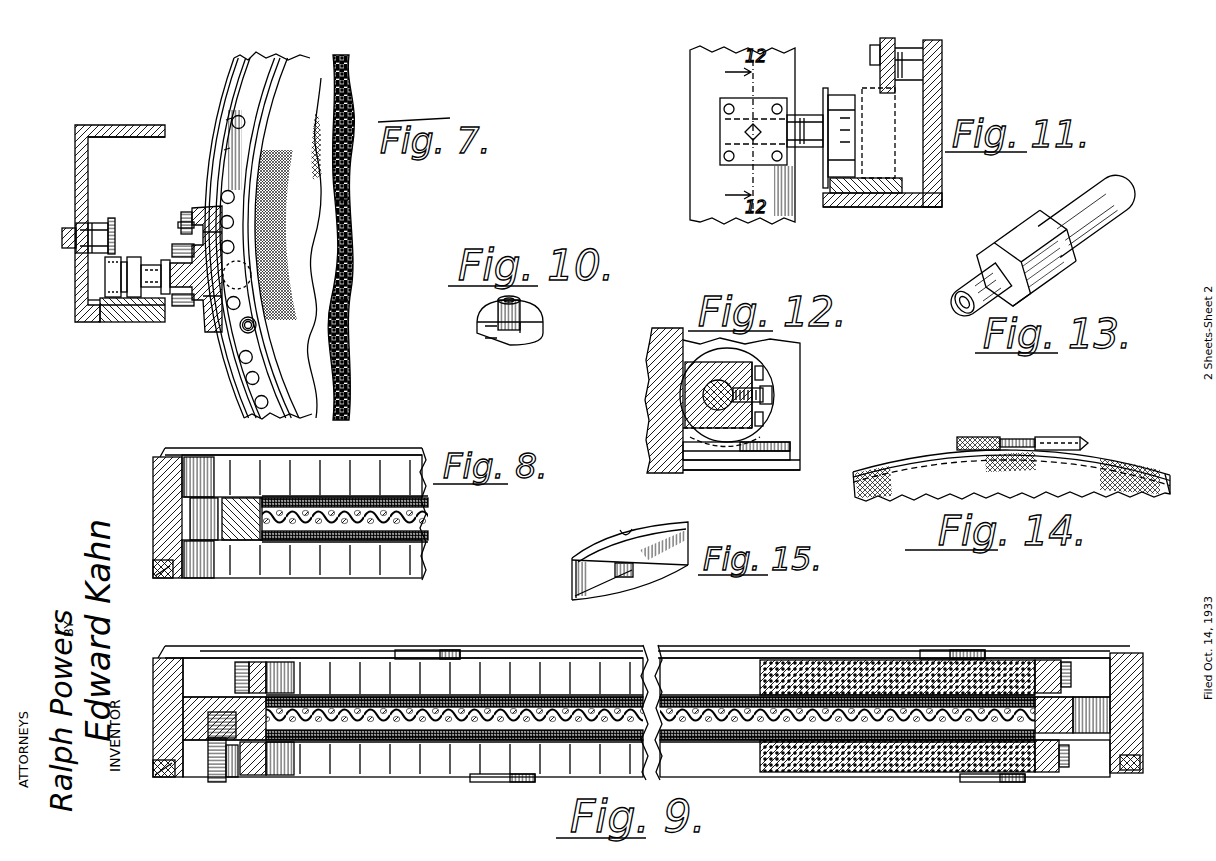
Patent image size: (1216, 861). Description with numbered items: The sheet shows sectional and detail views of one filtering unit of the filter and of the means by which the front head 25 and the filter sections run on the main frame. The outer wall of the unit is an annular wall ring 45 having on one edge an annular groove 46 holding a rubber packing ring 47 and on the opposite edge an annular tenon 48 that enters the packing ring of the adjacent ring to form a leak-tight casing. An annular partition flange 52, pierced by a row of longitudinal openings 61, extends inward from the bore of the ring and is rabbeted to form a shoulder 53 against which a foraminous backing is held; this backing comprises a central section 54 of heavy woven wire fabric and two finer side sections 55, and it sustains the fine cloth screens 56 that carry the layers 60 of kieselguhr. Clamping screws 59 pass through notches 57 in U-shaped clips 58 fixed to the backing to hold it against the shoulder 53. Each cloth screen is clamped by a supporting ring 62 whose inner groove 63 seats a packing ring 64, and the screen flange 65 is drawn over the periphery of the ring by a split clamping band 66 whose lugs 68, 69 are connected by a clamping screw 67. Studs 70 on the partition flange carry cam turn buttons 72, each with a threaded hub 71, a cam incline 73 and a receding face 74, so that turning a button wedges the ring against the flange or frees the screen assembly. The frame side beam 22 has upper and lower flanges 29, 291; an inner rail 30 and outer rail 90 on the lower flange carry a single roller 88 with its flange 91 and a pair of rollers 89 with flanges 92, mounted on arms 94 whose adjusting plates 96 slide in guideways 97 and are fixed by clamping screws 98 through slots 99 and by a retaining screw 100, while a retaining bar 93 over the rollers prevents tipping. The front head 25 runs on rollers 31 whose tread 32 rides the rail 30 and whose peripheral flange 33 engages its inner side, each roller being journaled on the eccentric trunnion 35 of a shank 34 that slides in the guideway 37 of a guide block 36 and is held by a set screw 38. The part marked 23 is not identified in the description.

In FIG. 7, the frame side beam 22 is at (76, 158).
In FIG. 11, the frame member 23 is at (942, 146).
In FIG. 12, the frame member 23 is at (800, 350).
In FIG. 12, the front head 25 is at (660, 338).
In FIG. 7, the upper flange 29 is at (122, 127).
In FIG. 7, the inner rail 30 is at (135, 322).
In FIG. 11, the inner rail 30 is at (835, 207).
In FIG. 12, the inner rail 30 is at (790, 448).
In FIG. 11, the supporting roller 31 is at (820, 150).
In FIG. 11, the tread 32 is at (840, 100).
In FIG. 11, the peripheral flange 33 is at (825, 95).
In FIG. 12, the peripheral flange 33 is at (772, 418).
In FIG. 11, the shank 34 is at (722, 142).
In FIG. 12, the shank 34 is at (688, 416).
In FIG. 13, the shank 34 is at (1038, 240).
In FIG. 13, the trunnion 35 is at (964, 294).
In FIG. 11, the guide block 36 is at (722, 128).
In FIG. 12, the guide block 36 is at (748, 442).
In FIG. 12, the guideway 37 is at (700, 400).
In FIG. 11, the set screw 38 is at (748, 135).
In FIG. 12, the set screw 38 is at (772, 390).
In FIG. 7, the wall ring 45 is at (238, 80).
In FIG. 8, the wall ring 45 is at (154, 470).
In FIG. 9, the wall ring 45 is at (156, 680).
In FIG. 8, the annular groove 46 is at (154, 556).
In FIG. 9, the annular groove 46 is at (156, 768).
In FIG. 7, the packing ring 47 is at (246, 62).
In FIG. 8, the packing ring 47 is at (162, 578).
In FIG. 9, the packing ring 47 is at (164, 780).
In FIG. 8, the annular tenon 48 is at (172, 450).
In FIG. 9, the annular tenon 48 is at (170, 648).
In FIG. 7, the partition flange 52 is at (271, 76).
In FIG. 8, the partition flange 52 is at (236, 540).
In FIG. 9, the partition flange 52 is at (190, 700).
In FIG. 8, the annular shoulder 53 is at (300, 498).
In FIG. 9, the annular shoulder 53 is at (290, 662).
In FIG. 7, the central section 54 is at (352, 112).
In FIG. 8, the central section 54 is at (420, 520).
In FIG. 9, the central section 54 is at (440, 720).
In FIG. 7, the side sections 55 is at (350, 90).
In FIG. 8, the side sections 55 is at (420, 498).
In FIG. 9, the side sections 55 is at (528, 700).
In FIG. 7, the cloth screens 56 is at (323, 90).
In FIG. 9, the cloth screens 56 is at (470, 695).
In FIG. 14, the cloth screens 56 is at (905, 488).
In FIG. 15, the notches 57 is at (626, 537).
In FIG. 15, the U-shaped clips 58 is at (640, 590).
In FIG. 8, the clamping screws 59 is at (262, 498).
In FIG. 9, the kieselguhr layers 60 is at (805, 668).
In FIG. 7, the longitudinal openings 61 is at (245, 122).
In FIG. 8, the longitudinal openings 61 is at (212, 496).
In FIG. 9, the longitudinal openings 61 is at (1090, 697).
In FIG. 7, the supporting ring 62 is at (286, 82).
In FIG. 8, the supporting ring 62 is at (304, 514).
In FIG. 9, the supporting ring 62 is at (360, 662).
In FIG. 9, the annular groove 63 is at (242, 662).
In FIG. 9, the packing ring 64 is at (264, 662).
In FIG. 7, the screen flange 65 is at (285, 70).
In FIG. 9, the screen flange 65 is at (1064, 768).
In FIG. 9, the split clamping band 66 is at (1060, 662).
In FIG. 14, the split clamping band 66 is at (1138, 480).
In FIG. 14, the clamping screw 67 is at (1016, 439).
In FIG. 14, the lug 68 is at (975, 437).
In FIG. 14, the lug 69 is at (1062, 437).
In FIG. 7, the studs 70 is at (254, 330).
In FIG. 9, the studs 70 is at (212, 720).
In FIG. 9, the threaded hub 71 is at (208, 745).
In FIG. 10, the threaded hub 71 is at (498, 300).
In FIG. 7, the cam turn button 72 is at (256, 322).
In FIG. 9, the cam turn button 72 is at (428, 650).
In FIG. 10, the cam turn button 72 is at (544, 322).
In FIG. 10, the cam incline 73 is at (516, 338).
In FIG. 10, the receding face 74 is at (490, 332).
In FIG. 7, the single supporting roller 88 is at (150, 262).
In FIG. 7, the pair of supporting rollers 89 is at (112, 272).
In FIG. 7, the outer rail 90 is at (100, 318).
In FIG. 11, the outer rail 90 is at (890, 193).
In FIG. 7, the annular flange 91 is at (160, 258).
In FIG. 7, the annular flange 92 is at (113, 230).
In FIG. 7, the retaining bar 93 is at (90, 212).
In FIG. 11, the retaining bar 93 is at (900, 62).
In FIG. 7, the arm 94 is at (185, 312).
In FIG. 7, the adjusting plate 96 is at (190, 337).
In FIG. 7, the guideway 97 is at (220, 272).
In FIG. 7, the clamping screws 98 is at (220, 250).
In FIG. 7, the slots 99 is at (185, 300).
In FIG. 7, the retaining screw 100 is at (187, 212).
In FIG. 7, the lower flange 291 is at (76, 312).
In FIG. 11, the lower flange 291 is at (942, 196).
In FIG. 12, the lower flange 291 is at (795, 472).